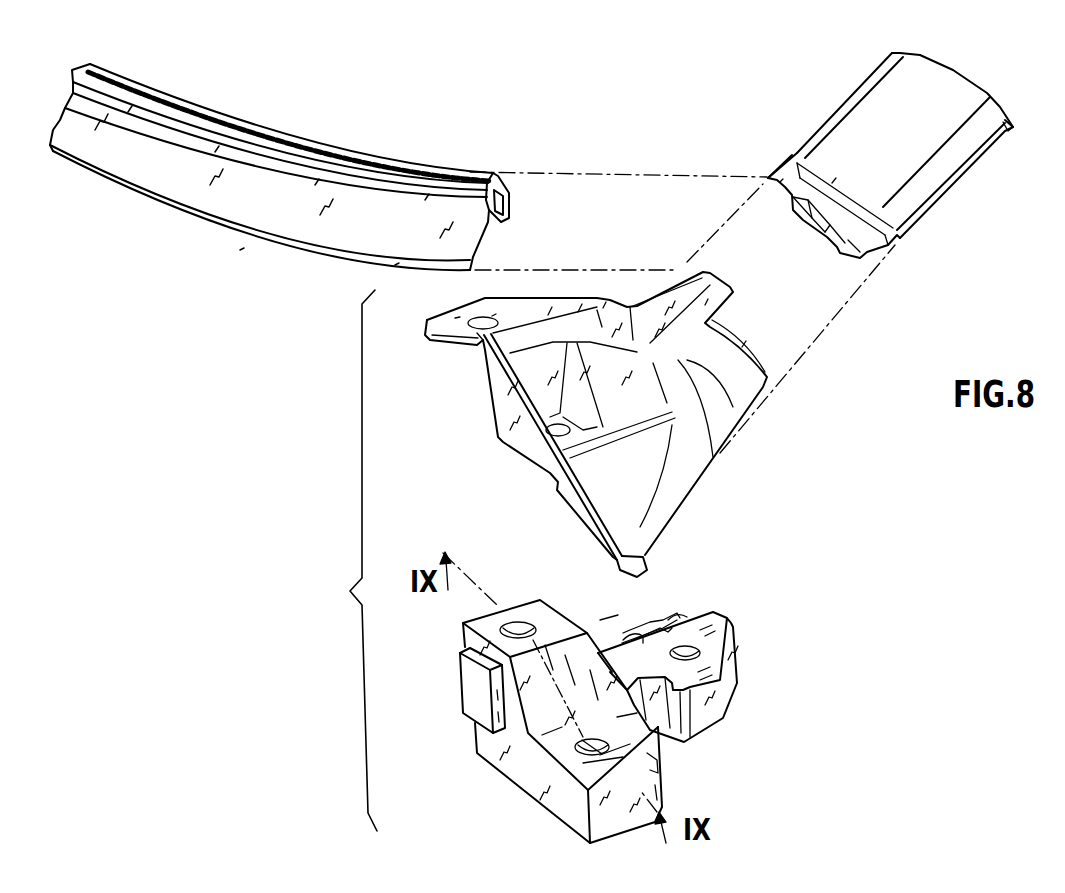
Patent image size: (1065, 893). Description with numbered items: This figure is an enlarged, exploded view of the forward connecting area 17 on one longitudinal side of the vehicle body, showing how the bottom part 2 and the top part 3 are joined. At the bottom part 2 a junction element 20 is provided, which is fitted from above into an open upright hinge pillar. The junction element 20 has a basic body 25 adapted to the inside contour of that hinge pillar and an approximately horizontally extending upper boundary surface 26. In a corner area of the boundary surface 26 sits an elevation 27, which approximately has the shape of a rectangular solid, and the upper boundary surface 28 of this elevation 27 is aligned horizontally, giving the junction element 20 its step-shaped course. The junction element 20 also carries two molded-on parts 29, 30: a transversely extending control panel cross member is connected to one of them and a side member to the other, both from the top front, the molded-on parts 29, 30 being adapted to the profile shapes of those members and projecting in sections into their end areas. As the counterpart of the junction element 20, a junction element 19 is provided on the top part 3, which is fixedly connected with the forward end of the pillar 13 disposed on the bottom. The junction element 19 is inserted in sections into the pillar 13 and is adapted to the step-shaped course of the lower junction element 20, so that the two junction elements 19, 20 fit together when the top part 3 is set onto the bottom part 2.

The bottom part 2 is at (737, 713).
The top part 3 is at (927, 232).
The pillar 13 is at (1005, 118).
The forward connecting area 17 is at (733, 552).
The junction element 19 is at (484, 417).
The junction element 20 is at (516, 790).
The basic body 25 is at (662, 773).
The upper boundary surface 26 is at (728, 617).
The elevation 27 is at (545, 645).
The upper boundary surface 28 is at (521, 618).
The molded-on part 29 is at (458, 684).
The molded-on part 30 is at (667, 618).